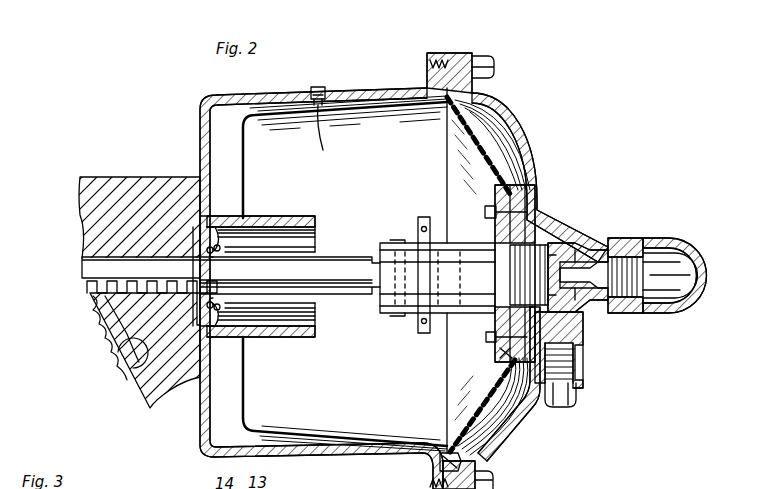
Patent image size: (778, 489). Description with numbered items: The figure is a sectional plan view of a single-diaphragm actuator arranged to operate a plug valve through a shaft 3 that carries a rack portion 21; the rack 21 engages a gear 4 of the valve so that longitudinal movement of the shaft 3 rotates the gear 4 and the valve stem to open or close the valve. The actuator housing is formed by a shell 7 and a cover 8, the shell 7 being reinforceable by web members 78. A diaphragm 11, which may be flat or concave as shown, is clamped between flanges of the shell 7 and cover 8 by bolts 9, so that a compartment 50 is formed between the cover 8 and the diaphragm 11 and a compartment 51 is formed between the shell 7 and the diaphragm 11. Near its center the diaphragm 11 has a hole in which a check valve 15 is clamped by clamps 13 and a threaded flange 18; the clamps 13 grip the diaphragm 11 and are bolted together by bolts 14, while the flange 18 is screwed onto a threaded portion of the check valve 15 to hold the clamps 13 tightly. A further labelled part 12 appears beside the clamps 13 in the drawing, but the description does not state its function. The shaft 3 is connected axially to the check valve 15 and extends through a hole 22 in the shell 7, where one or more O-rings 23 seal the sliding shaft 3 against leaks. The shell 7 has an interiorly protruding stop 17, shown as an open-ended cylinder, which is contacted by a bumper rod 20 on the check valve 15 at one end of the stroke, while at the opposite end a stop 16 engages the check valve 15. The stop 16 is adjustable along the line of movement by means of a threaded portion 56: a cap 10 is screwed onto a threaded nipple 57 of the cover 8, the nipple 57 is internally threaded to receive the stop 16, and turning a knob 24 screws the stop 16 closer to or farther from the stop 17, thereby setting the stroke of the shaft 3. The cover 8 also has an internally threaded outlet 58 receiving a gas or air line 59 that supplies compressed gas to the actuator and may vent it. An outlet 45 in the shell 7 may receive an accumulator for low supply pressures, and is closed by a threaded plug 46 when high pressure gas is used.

The shaft 3 is at (82, 262).
The gear 4 is at (132, 385).
The shell 7 is at (383, 91).
The cover 8 is at (548, 222).
The bolts 9 is at (494, 65).
The cap 10 is at (700, 250).
The diaphragm 11 is at (475, 138).
The clamp bolt 12 is at (497, 345).
The clamps 13 is at (495, 320).
The bolts 14 is at (485, 212).
The check valve 15 is at (380, 243).
The stop 16 is at (578, 250).
The stop 17 is at (285, 337).
The threaded flange 18 is at (560, 243).
The bumper rod 20 is at (418, 327).
The rack portion 21 is at (110, 308).
The hole 22 is at (213, 230).
The O-rings 23 is at (228, 320).
The knob 24 is at (665, 253).
The outlet 45 is at (330, 139).
The threaded plug 46 is at (318, 87).
The compartment 50 is at (505, 435).
The compartment 51 is at (326, 403).
The threaded portion 56 is at (648, 300).
The threaded nipple 57 is at (620, 238).
The internally threaded outlet 58 is at (585, 345).
The gas or air line 59 is at (578, 392).
The web members 78 is at (243, 178).